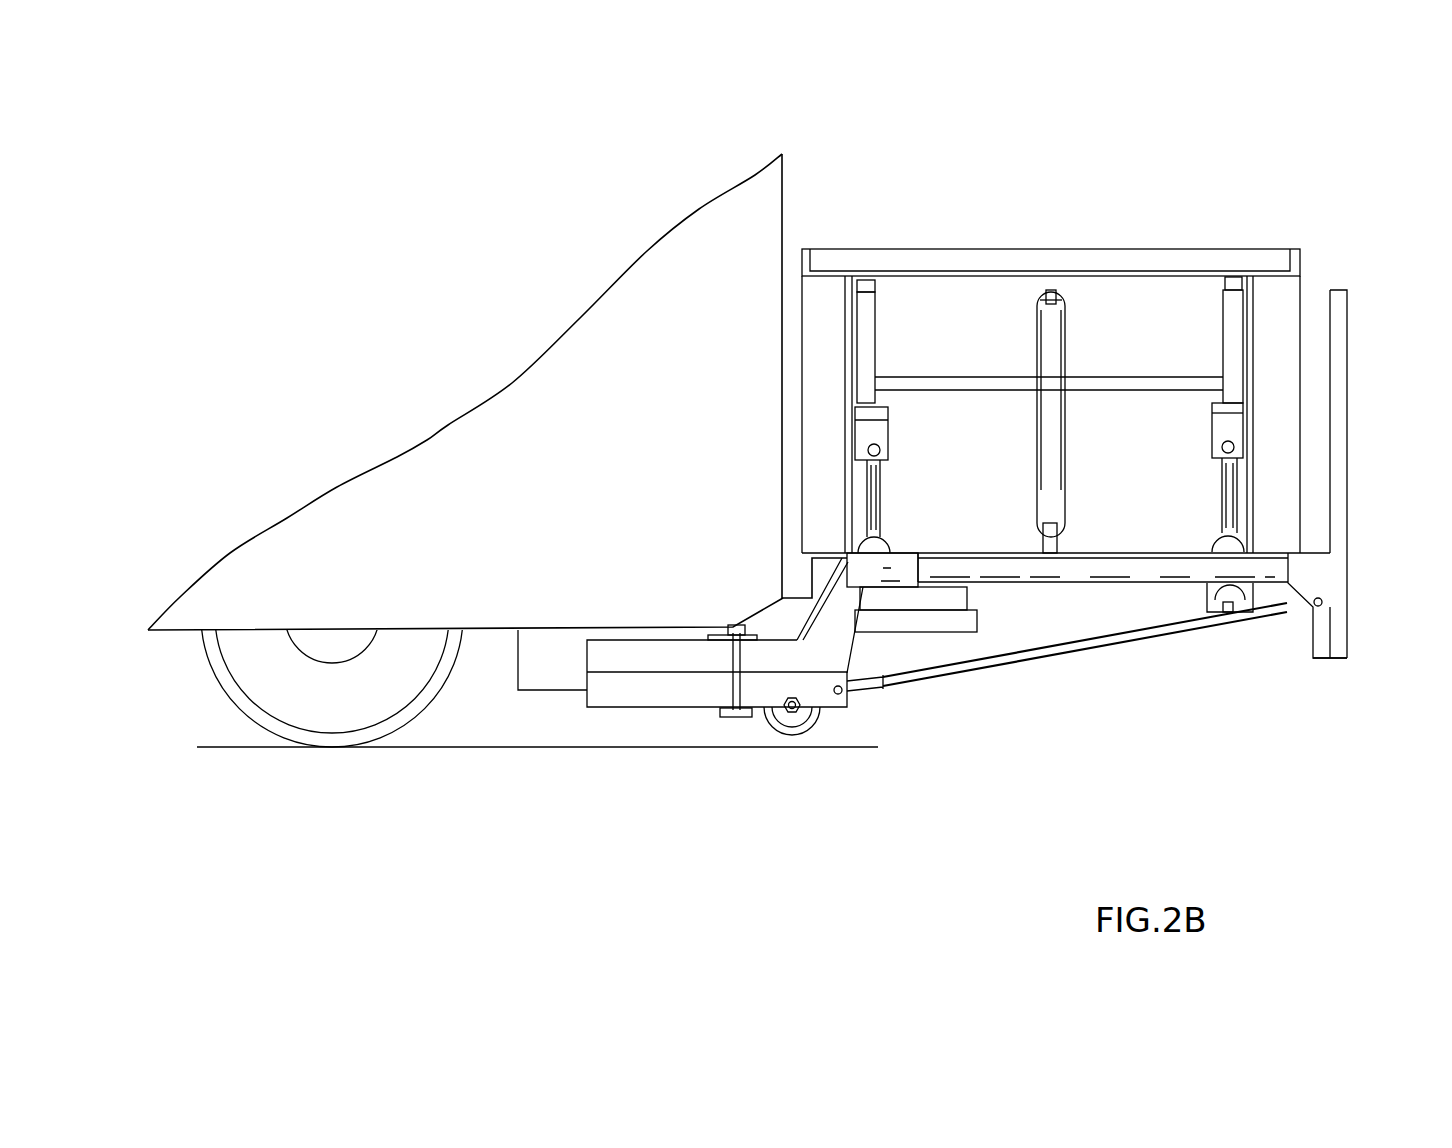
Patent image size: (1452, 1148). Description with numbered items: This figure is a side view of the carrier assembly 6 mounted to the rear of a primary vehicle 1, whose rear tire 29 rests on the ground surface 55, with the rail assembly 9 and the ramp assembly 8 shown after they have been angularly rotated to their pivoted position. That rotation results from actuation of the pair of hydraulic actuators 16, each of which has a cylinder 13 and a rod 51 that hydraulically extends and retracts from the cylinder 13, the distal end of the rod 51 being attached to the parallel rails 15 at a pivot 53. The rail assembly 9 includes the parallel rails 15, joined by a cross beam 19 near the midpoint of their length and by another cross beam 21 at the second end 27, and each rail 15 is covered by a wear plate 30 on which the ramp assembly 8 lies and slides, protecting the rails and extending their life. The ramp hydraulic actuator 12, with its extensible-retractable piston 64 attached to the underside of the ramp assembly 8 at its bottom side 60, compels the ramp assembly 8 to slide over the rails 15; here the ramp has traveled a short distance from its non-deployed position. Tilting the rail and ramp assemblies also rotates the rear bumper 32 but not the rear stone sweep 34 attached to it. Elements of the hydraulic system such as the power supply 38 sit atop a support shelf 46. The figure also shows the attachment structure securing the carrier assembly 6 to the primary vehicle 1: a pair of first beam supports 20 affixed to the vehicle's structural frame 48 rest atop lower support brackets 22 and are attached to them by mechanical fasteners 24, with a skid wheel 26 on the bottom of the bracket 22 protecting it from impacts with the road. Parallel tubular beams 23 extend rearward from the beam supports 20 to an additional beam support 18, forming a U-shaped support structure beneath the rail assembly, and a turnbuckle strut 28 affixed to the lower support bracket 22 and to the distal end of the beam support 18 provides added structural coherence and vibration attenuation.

The primary vehicle 1 is at (451, 421).
The carrier assembly 6 is at (1065, 208).
The ramp assembly 8 is at (800, 310).
The rail assembly 9 is at (1188, 292).
The hydraulic actuator 12 is at (1033, 357).
The cylinder 13 is at (880, 535).
The parallel rail 15 is at (877, 358).
The hydraulic actuator 16 is at (883, 480).
The beam support 18 is at (1327, 590).
The cross beam 19 is at (1080, 393).
The first beam support 20 is at (902, 548).
The cross beam 21 is at (1110, 293).
The lower support bracket 22 is at (662, 708).
The tubular beam 23 is at (1165, 590).
The mechanical fastener 24 is at (727, 717).
The skid wheel 26 is at (813, 727).
The second end 27 is at (990, 293).
The turnbuckle strut 28 is at (1157, 643).
The rear tire 29 is at (217, 678).
The wear plate 30 is at (860, 278).
The rear bumper 32 is at (1350, 563).
The rear stone sweep 34 is at (1350, 647).
The power supply 38 is at (970, 595).
The support shelf 46 is at (958, 633).
The structural frame 48 is at (542, 693).
The rod 51 is at (878, 500).
The pivot 53 is at (920, 415).
The ground surface 55 is at (441, 746).
The bottom side 60 is at (1004, 449).
The piston 64 is at (1068, 530).